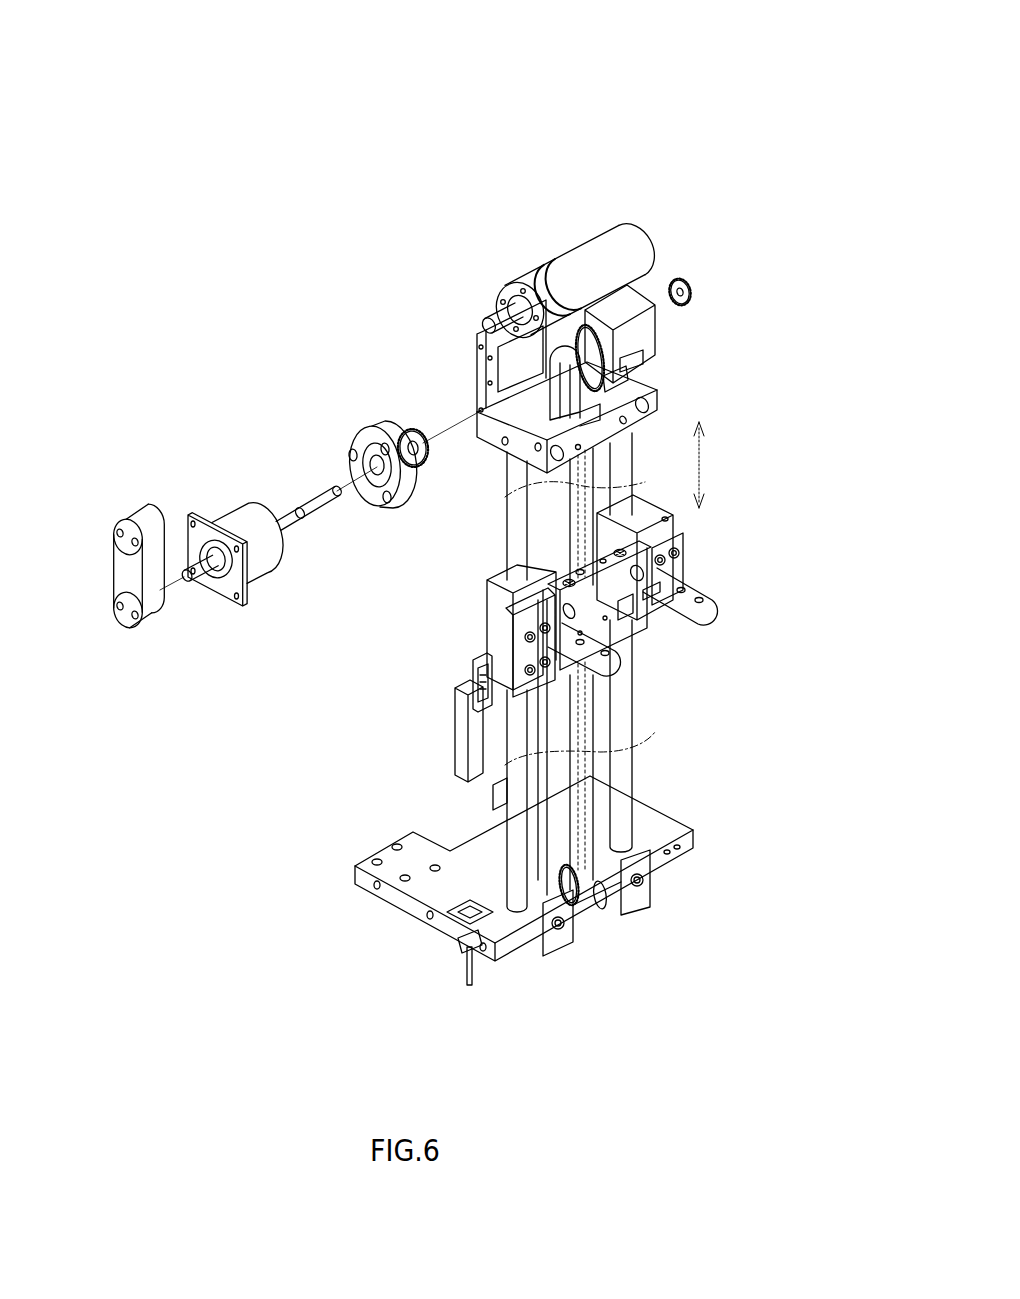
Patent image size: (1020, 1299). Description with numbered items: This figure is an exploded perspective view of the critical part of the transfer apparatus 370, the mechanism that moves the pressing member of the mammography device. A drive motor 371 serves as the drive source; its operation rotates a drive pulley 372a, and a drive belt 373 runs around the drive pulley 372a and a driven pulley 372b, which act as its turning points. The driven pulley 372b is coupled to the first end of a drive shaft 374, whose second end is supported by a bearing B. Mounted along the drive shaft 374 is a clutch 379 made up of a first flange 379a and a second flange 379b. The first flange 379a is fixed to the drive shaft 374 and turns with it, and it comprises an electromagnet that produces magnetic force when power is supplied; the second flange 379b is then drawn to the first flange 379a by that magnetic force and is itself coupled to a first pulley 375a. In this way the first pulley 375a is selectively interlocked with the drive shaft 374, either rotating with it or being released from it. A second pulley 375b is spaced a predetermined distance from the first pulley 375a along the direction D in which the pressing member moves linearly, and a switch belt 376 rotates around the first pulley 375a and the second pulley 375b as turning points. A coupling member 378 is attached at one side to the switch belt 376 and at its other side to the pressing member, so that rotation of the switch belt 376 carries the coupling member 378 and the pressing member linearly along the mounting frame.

The transfer apparatus 370 is at (429, 518).
The drive motor 371 is at (585, 232).
The drive pulley 372a is at (115, 530).
The driven pulley 372b is at (122, 627).
The drive belt 373 is at (104, 580).
The drive shaft 374 is at (190, 567).
The first pulley 375a is at (407, 430).
The second pulley 375b is at (548, 897).
The switch belt 376 is at (600, 400).
The coupling member 378 is at (698, 595).
The clutch 379 is at (308, 465).
The first flange 379a is at (212, 508).
The second flange 379b is at (358, 428).
The bearing B is at (676, 280).
The moving direction D is at (701, 481).